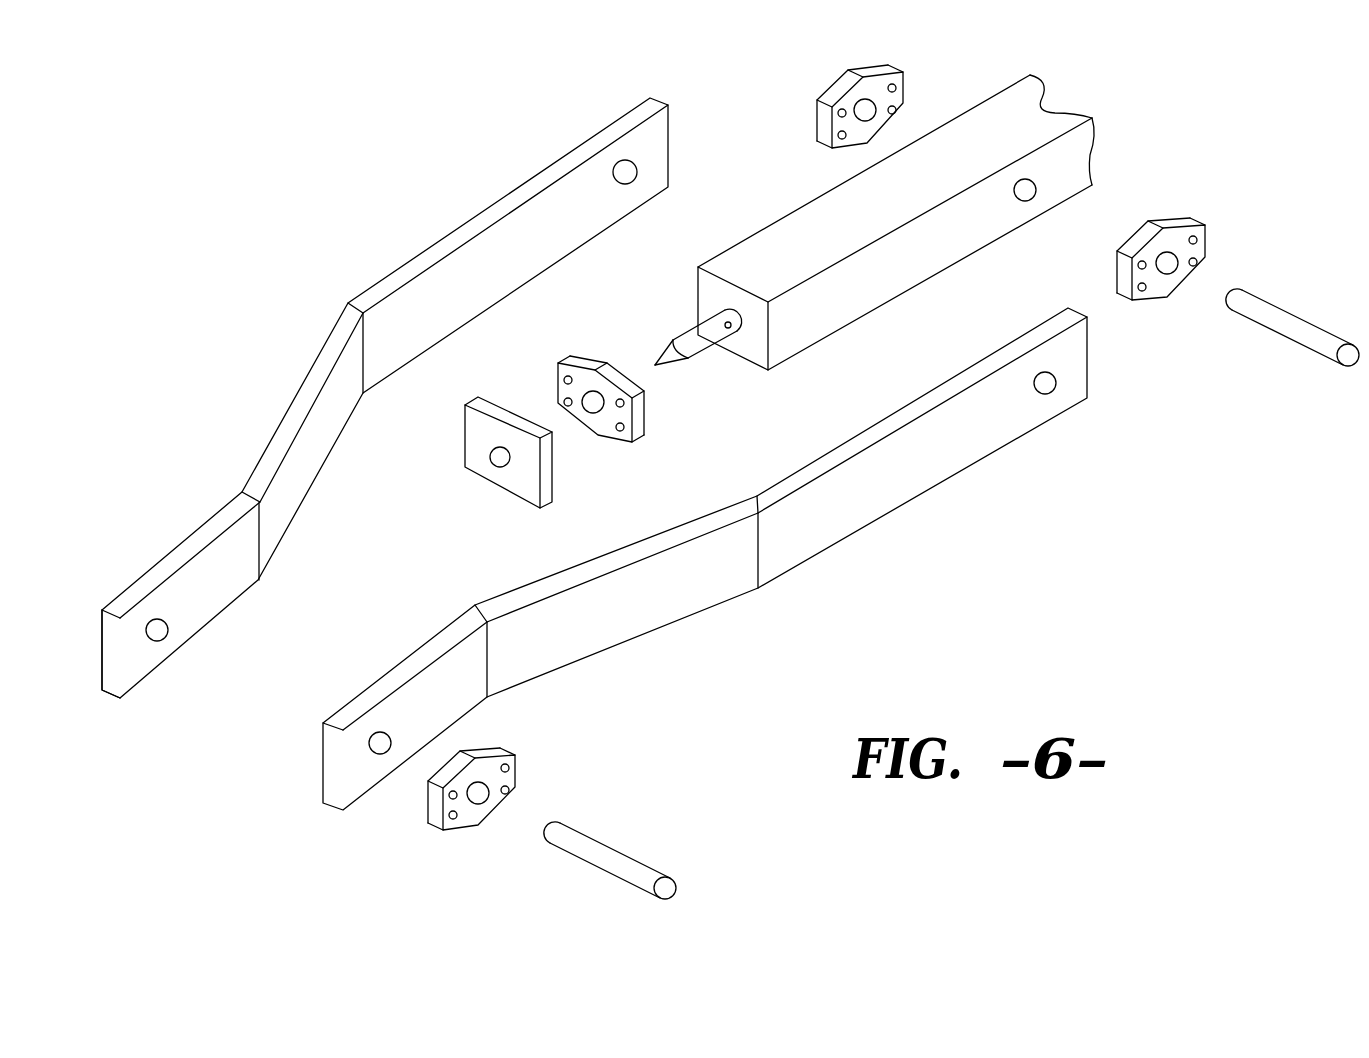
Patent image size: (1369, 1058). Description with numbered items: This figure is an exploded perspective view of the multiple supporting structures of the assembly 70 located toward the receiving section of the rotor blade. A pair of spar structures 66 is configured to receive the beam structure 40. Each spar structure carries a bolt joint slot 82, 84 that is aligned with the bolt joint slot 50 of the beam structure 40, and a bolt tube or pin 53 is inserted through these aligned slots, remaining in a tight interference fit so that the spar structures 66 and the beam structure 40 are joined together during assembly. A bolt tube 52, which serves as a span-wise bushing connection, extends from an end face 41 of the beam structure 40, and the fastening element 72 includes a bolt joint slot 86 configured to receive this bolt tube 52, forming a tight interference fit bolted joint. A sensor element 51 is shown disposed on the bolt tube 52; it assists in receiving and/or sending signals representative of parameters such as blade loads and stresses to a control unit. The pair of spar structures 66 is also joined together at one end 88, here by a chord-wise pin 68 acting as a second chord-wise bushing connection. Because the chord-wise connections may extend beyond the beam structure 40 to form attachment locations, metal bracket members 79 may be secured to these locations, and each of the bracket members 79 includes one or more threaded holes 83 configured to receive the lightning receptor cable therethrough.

The beam structure 40 is at (916, 244).
The end face 41 is at (758, 352).
The bolt joint slot 50 is at (1030, 193).
The sensor element 51 is at (693, 356).
The bolt tube 52 is at (678, 358).
The bolt tube or pin 53 is at (1292, 310).
The spar structures 66 is at (607, 437).
The chord-wise pin 68 is at (625, 848).
The assembly 70 is at (222, 253).
The fastening element 72 is at (472, 466).
The bracket members 79 is at (847, 468).
The bolt joint slot 82 is at (1053, 385).
The threaded holes 83 is at (563, 402).
The bolt joint slot 84 is at (626, 168).
The bolt joint slot 86 is at (493, 453).
The end 88 is at (158, 687).